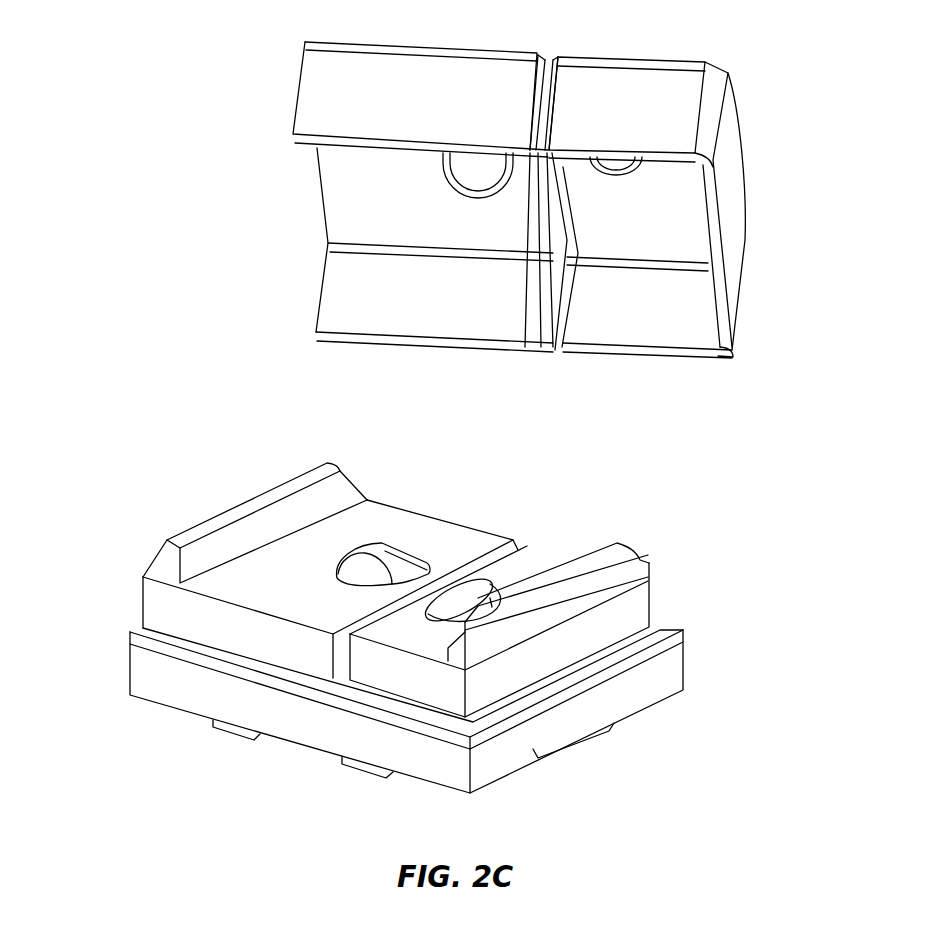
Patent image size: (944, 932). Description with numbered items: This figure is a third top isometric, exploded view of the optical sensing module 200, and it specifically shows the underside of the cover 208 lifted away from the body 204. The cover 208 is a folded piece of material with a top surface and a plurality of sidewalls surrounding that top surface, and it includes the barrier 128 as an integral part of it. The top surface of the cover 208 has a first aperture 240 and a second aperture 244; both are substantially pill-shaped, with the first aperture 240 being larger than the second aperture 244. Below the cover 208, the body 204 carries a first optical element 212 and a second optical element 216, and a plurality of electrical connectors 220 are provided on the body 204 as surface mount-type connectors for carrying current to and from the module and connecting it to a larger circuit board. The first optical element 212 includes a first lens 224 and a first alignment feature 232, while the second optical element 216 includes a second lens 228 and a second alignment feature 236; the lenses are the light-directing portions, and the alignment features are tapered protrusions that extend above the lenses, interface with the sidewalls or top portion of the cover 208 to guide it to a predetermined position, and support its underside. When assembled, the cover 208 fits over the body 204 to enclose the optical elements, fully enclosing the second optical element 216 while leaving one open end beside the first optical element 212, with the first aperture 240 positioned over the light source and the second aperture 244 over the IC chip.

The optical sensing module 200 is at (136, 184).
The body 204 is at (678, 660).
The cover 208 is at (737, 338).
The first optical element 212 is at (279, 522).
The second optical element 216 is at (575, 584).
The electrical connectors 220 is at (565, 755).
The first lens 224 is at (360, 568).
The second lens 228 is at (463, 595).
The first alignment feature 232 is at (310, 470).
The second alignment feature 236 is at (632, 568).
The first aperture 240 is at (473, 175).
The second aperture 244 is at (613, 177).
The barrier 128 is at (546, 287).